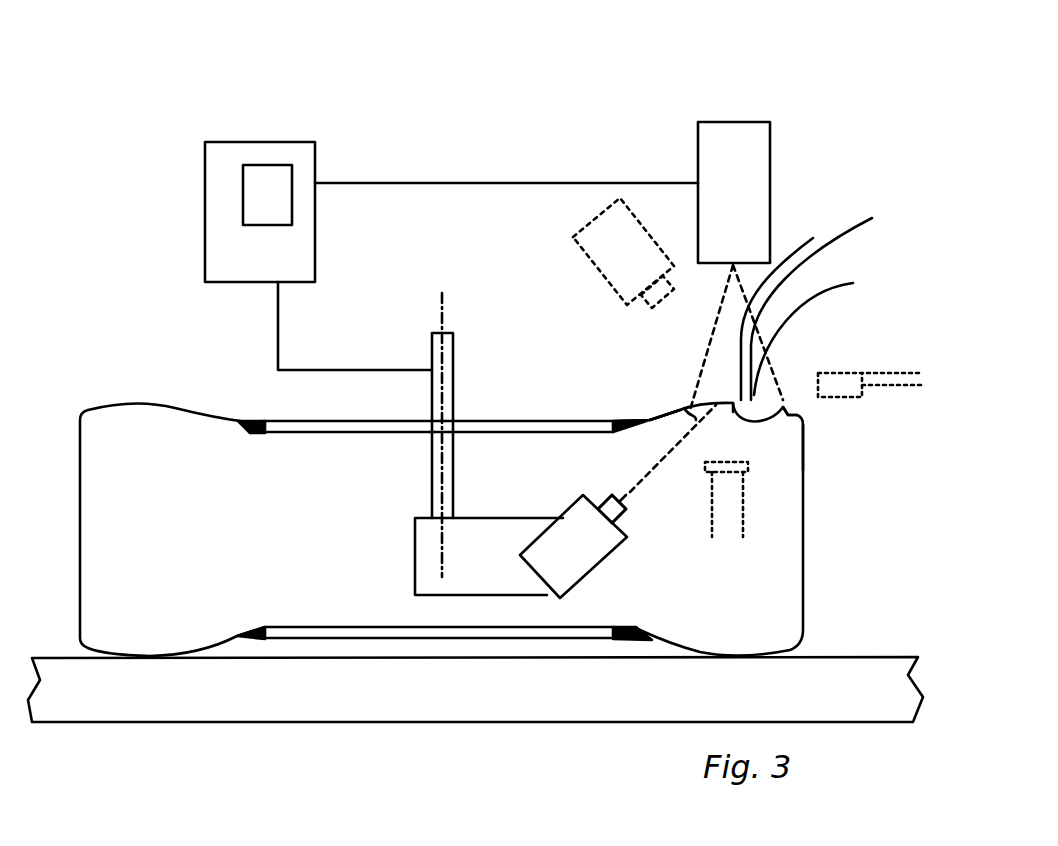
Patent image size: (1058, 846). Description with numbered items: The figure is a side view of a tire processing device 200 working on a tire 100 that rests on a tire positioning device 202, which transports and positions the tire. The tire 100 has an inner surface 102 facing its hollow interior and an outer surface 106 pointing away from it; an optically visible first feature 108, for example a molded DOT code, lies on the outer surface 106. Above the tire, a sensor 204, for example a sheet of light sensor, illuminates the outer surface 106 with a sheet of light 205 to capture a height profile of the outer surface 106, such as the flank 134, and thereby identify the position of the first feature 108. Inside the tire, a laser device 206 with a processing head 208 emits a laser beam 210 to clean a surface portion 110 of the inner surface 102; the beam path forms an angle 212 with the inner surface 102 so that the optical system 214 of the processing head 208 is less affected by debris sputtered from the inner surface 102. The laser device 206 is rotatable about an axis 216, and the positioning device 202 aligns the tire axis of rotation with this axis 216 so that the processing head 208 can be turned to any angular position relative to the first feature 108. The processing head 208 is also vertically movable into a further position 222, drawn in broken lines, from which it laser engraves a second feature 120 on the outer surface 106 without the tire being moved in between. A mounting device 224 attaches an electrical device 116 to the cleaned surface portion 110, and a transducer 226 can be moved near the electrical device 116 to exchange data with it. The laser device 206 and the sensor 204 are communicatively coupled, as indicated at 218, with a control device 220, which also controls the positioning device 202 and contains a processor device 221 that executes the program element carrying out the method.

The tire 100 is at (148, 408).
The inner surface 102 is at (805, 433).
The outer surface 106 is at (683, 410).
The optically visible feature 108 is at (845, 297).
The surface portion 110 is at (789, 410).
The electrical device 116 is at (748, 463).
The second feature 120 is at (728, 400).
The flank 134 is at (840, 324).
The tire processing device 200 is at (657, 63).
The tire positioning device 202 is at (833, 657).
The sensor 204 is at (737, 122).
The sheet of light 205 is at (810, 307).
The laser device 206 is at (415, 568).
The processing head 208 is at (634, 217).
The laser beam 210 is at (643, 480).
The angle 212 is at (687, 410).
The optical system 214 is at (617, 512).
The axis 216 is at (437, 300).
The communicative coupling 218 is at (460, 182).
The control device 220 is at (208, 208).
The processor device 221 is at (265, 180).
The further position 222 is at (600, 218).
The mounting device 224 is at (745, 503).
The transducer 226 is at (862, 383).